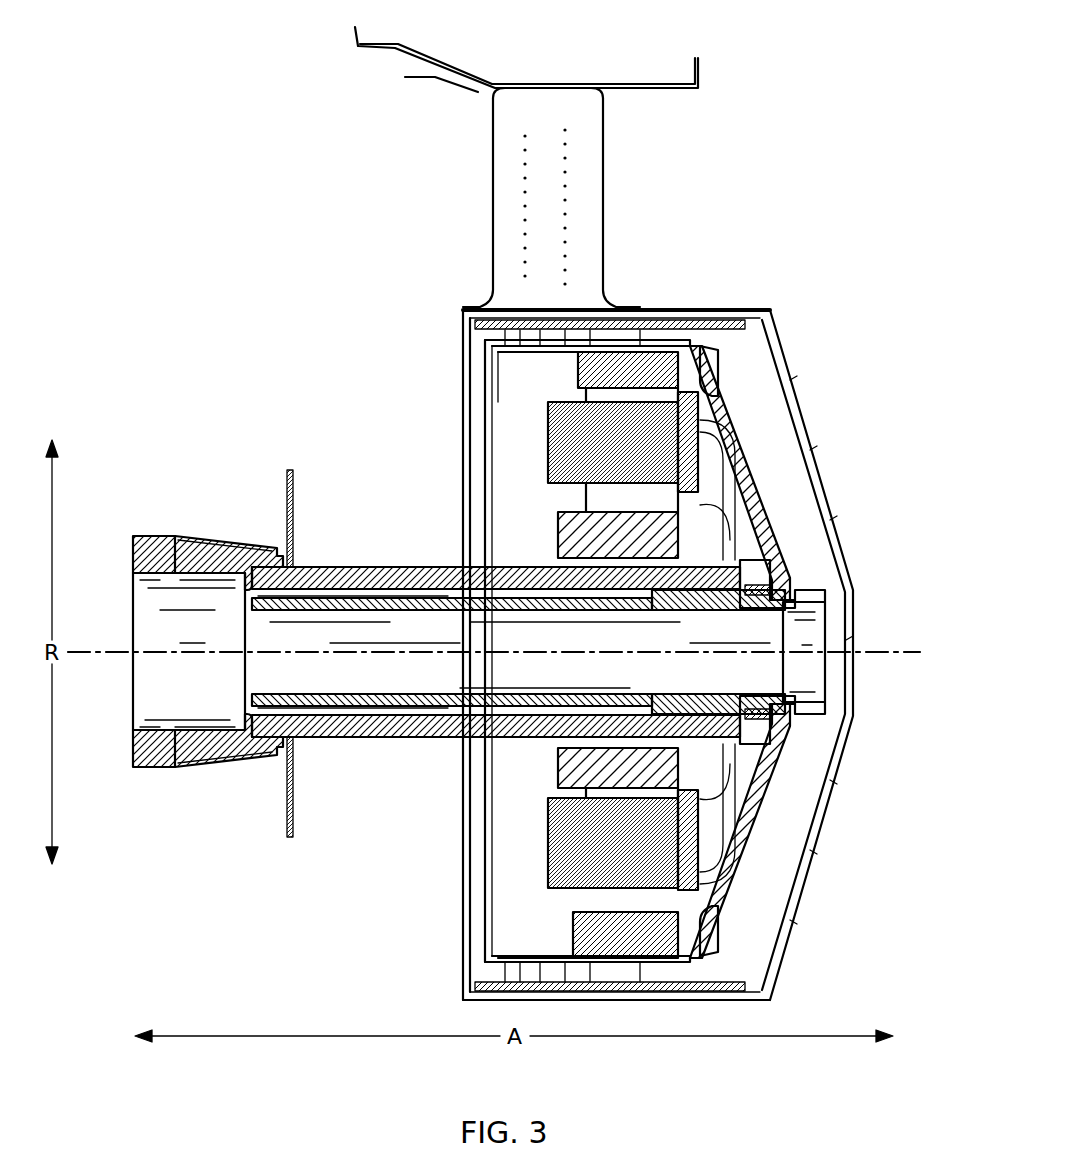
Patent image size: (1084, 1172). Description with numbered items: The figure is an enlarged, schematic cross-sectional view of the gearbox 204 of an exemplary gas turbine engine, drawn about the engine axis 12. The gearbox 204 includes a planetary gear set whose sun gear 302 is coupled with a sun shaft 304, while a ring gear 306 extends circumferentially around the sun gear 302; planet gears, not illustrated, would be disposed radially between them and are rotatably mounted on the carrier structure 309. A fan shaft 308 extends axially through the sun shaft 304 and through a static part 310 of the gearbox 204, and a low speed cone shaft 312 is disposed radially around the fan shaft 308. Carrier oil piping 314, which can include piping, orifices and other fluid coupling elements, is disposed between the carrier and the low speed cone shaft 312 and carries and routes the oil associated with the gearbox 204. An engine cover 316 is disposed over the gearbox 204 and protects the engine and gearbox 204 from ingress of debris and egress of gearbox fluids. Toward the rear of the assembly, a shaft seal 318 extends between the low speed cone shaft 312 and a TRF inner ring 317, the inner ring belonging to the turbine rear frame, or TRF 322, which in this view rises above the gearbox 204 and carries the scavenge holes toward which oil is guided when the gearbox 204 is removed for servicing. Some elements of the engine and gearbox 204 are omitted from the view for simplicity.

The axis of rotation 12 is at (872, 653).
The gearbox 204 is at (654, 609).
The sun gear 302 is at (555, 522).
The sun shaft 304 is at (283, 503).
The ring gear 306 is at (622, 345).
The fan shaft 308 is at (820, 690).
The carrier structure 309 is at (705, 487).
The static part 310 is at (155, 715).
The low speed cone shaft 312 is at (770, 598).
The carrier oil piping 314 is at (727, 500).
The engine cover 316 is at (818, 462).
The TRF inner ring 317 is at (700, 322).
The shaft seal 318 is at (705, 345).
The TRF 322 is at (597, 192).